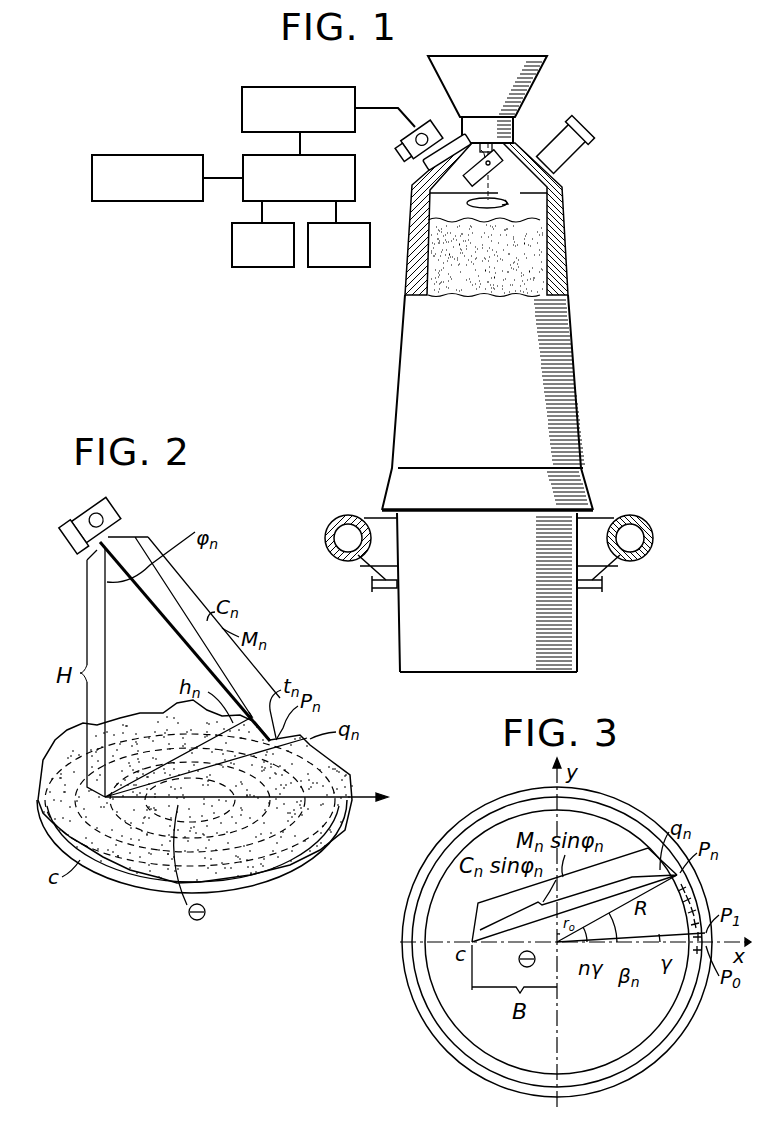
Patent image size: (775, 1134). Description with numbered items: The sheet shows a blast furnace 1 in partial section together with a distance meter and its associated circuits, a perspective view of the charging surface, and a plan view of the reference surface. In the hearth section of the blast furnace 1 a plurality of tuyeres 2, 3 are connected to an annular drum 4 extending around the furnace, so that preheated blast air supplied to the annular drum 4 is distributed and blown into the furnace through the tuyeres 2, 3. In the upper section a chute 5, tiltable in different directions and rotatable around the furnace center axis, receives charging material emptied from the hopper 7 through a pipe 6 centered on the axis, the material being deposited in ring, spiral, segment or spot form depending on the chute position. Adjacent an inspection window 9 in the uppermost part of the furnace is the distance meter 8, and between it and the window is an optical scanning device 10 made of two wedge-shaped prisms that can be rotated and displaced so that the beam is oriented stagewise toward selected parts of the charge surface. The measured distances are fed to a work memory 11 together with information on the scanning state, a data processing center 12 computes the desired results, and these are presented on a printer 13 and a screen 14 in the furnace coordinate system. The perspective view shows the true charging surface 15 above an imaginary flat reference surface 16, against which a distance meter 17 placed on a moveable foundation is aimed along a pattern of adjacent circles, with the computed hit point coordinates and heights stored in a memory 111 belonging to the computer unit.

In FIG. 1, the blast furnace 1 is at (565, 411).
In FIG. 1, the tuyere 2 is at (393, 590).
In FIG. 1, the tuyere 3 is at (585, 590).
In FIG. 1, the annular drum 4 is at (627, 536).
In FIG. 1, the chute 5 is at (488, 194).
In FIG. 1, the pipe 6 is at (487, 143).
In FIG. 1, the hopper 7 is at (520, 80).
In FIG. 1, the distance meter 8 is at (405, 147).
In FIG. 1, the inspection window 9 is at (455, 165).
In FIG. 1, the scanning device 10 is at (428, 167).
In FIG. 1, the work memory 11 is at (306, 96).
In FIG. 1, the memory 111 is at (152, 161).
In FIG. 1, the data processing center 12 is at (244, 163).
In FIG. 1, the printer 13 is at (232, 249).
In FIG. 1, the screen 14 is at (328, 267).
In FIG. 2, the charging surface 15 is at (343, 770).
In FIG. 2, the reference surface 16 is at (297, 867).
In FIG. 2, the camera 17 is at (70, 520).